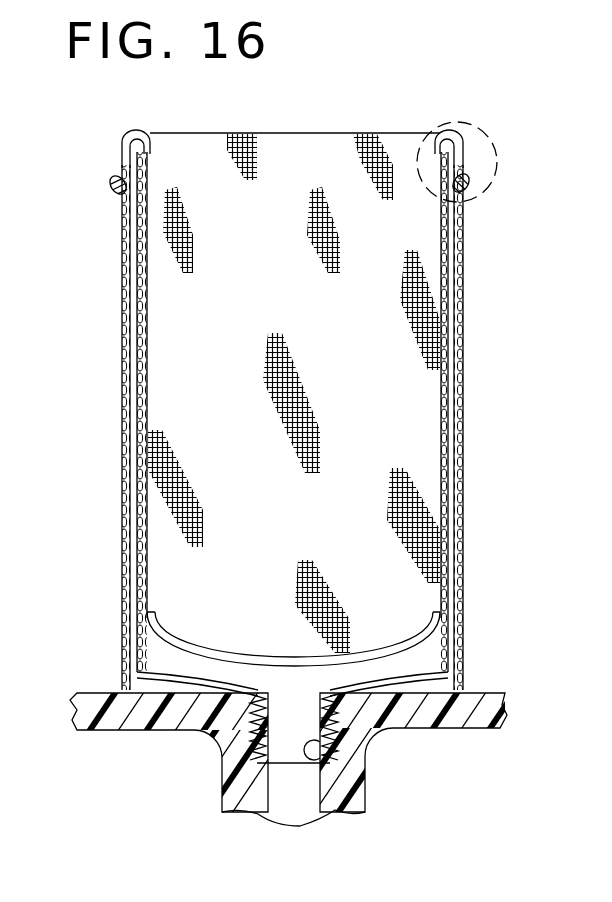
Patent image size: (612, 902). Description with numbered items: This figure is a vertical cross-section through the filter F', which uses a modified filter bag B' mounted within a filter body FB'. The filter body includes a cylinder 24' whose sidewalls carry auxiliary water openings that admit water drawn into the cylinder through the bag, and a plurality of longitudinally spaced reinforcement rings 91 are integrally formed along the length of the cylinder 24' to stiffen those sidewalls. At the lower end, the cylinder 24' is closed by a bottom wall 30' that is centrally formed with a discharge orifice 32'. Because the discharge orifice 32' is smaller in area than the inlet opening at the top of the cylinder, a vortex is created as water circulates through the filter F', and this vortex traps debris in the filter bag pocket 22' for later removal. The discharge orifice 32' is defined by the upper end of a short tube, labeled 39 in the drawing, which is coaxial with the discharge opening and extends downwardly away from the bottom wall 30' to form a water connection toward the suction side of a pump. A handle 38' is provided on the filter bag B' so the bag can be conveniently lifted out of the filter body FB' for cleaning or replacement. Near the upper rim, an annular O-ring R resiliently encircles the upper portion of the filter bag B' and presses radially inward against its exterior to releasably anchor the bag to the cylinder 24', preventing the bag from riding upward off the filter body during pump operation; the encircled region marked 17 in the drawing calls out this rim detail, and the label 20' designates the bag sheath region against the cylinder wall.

The detail area of FIG. 17 is at (443, 110).
The handle 38' is at (291, 123).
The annular O-ring R is at (470, 182).
The reinforcement rings 91 is at (450, 276).
The filter F' is at (110, 412).
The filter body FB' is at (480, 385).
The filter bag B' is at (294, 393).
The wall 20' is at (487, 427).
The filter bag pocket 22' is at (100, 427).
The cylinder 24' is at (332, 639).
The bottom wall 30' is at (173, 755).
The discharge orifice 32' is at (386, 755).
The threaded neck 39 is at (237, 800).